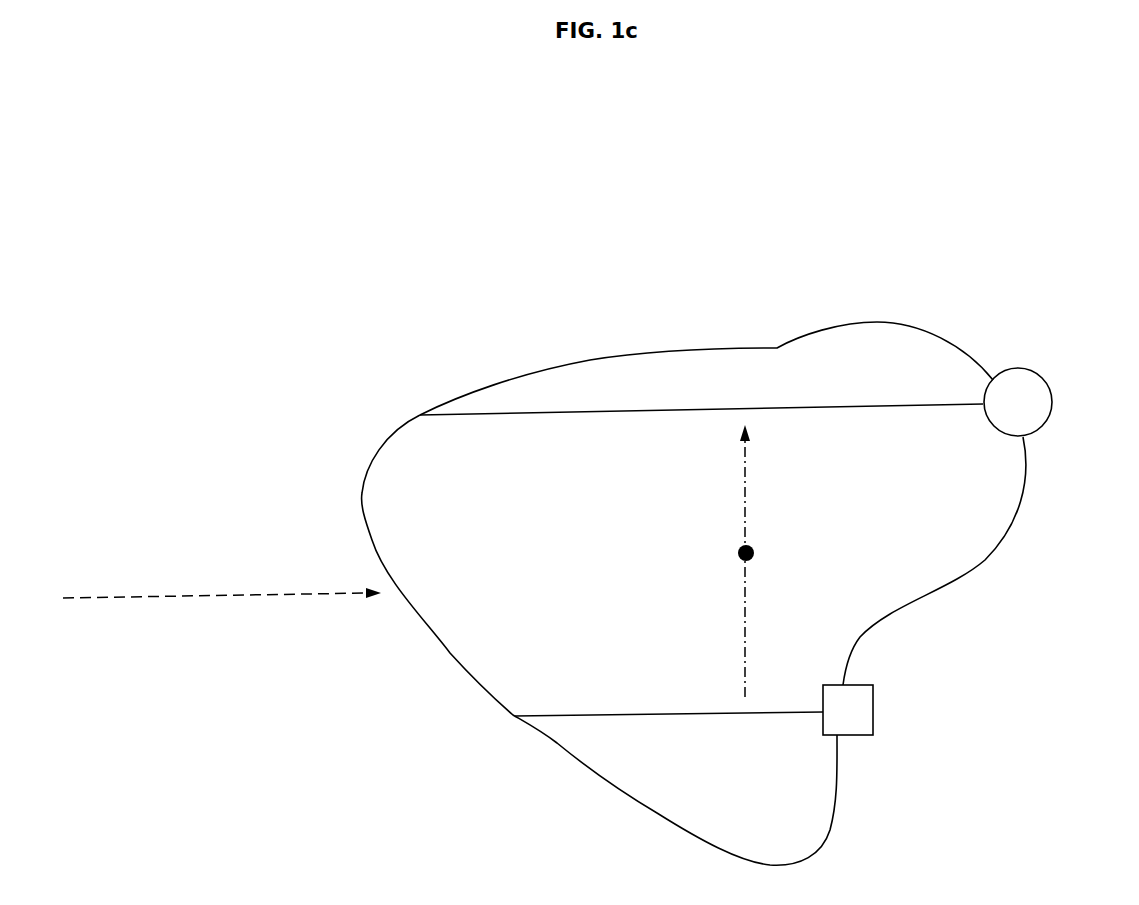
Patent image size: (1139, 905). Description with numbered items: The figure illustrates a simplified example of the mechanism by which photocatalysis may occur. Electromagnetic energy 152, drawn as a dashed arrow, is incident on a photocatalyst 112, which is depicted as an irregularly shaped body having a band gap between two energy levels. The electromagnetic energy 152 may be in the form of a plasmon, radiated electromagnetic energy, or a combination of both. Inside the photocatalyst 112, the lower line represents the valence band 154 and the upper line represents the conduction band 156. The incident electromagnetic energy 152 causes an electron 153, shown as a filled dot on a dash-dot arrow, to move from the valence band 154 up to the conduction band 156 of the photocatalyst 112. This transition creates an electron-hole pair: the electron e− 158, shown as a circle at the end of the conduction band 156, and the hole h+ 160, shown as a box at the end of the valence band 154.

The photocatalyst 112 is at (592, 360).
The electromagnetic energy 152 is at (223, 595).
The electron 153 is at (740, 560).
The valence band 154 is at (690, 715).
The conduction band 156 is at (768, 407).
The electron of electron-hole pair (e−) 158 is at (1048, 385).
The hole of electron-hole pair (h+) 160 is at (873, 722).